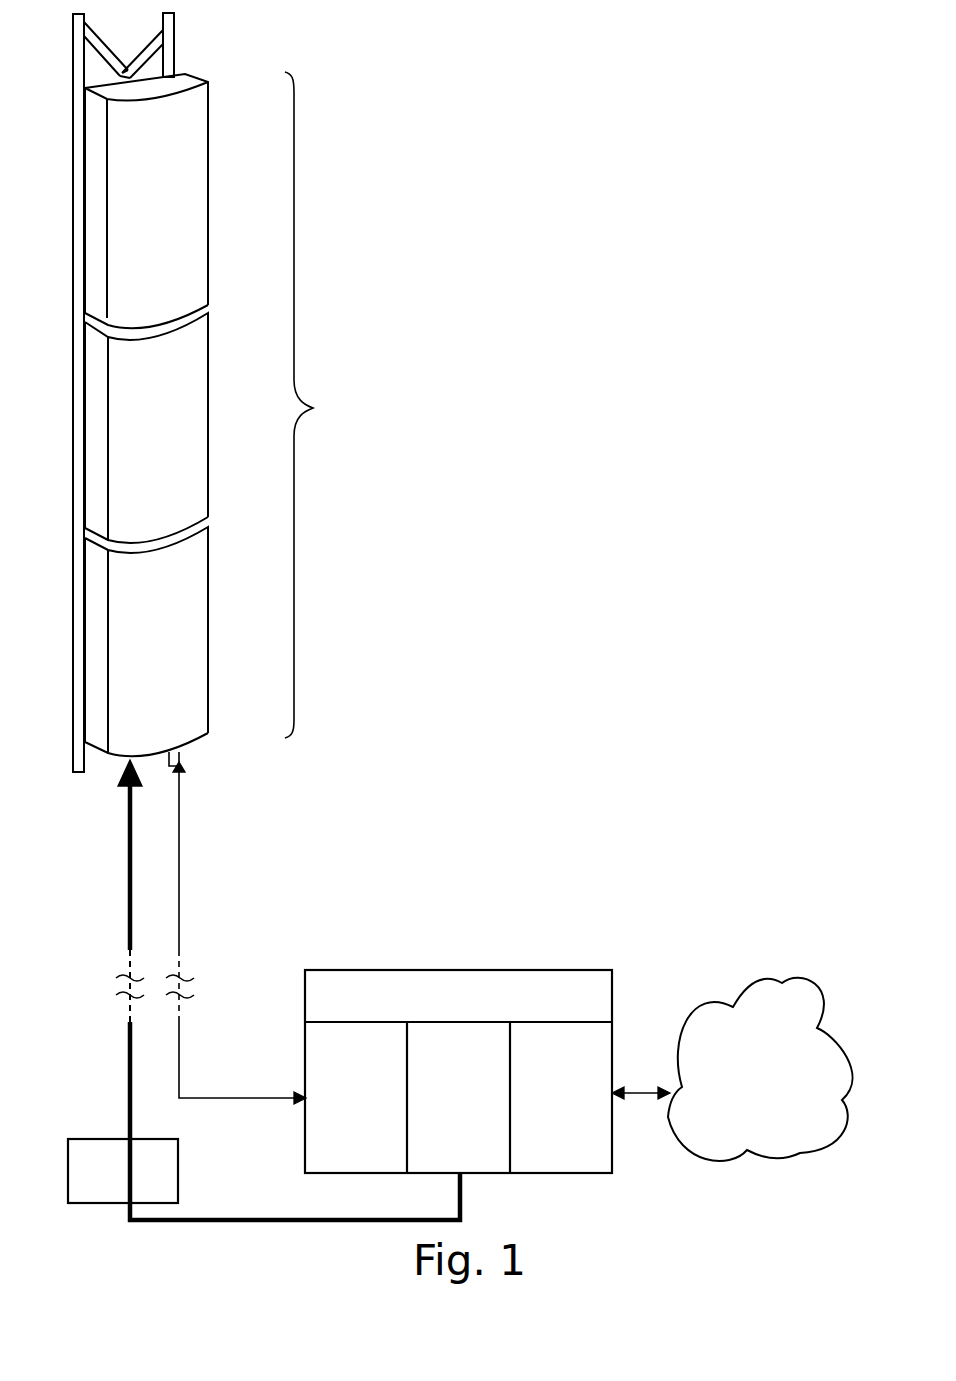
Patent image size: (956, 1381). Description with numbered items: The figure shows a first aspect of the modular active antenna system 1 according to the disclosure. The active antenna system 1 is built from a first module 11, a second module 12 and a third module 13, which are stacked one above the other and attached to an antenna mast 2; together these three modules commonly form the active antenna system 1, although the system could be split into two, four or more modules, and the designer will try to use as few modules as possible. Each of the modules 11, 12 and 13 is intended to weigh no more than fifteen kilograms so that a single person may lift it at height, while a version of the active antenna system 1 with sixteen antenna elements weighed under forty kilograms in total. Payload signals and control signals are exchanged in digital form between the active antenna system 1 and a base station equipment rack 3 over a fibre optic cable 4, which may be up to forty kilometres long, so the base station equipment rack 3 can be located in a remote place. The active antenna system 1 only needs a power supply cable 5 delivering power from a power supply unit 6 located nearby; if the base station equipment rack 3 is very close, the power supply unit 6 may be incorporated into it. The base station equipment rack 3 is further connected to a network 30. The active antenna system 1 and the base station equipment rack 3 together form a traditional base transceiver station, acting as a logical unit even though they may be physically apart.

The active antenna system 1 is at (212, 414).
The antenna mast 2 is at (76, 50).
The base station equipment rack 3 is at (560, 972).
The fibre optic cable 4 is at (180, 897).
The power supply cable 5 is at (130, 1037).
The power supply unit 6 is at (78, 1197).
The first module 11 is at (197, 594).
The second module 12 is at (197, 358).
The third module 13 is at (197, 122).
The network 30 is at (775, 997).